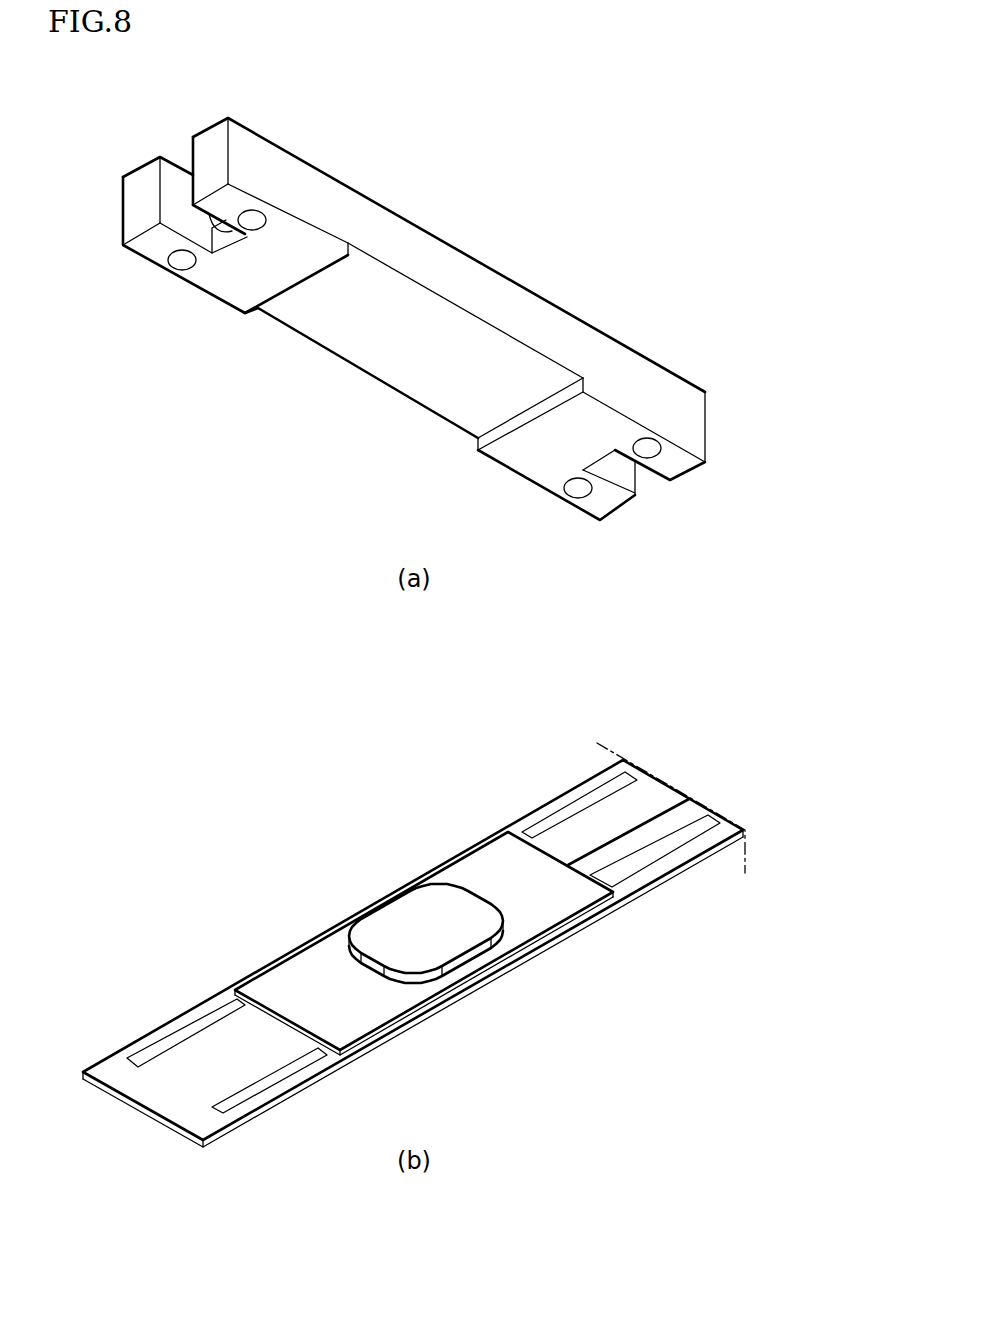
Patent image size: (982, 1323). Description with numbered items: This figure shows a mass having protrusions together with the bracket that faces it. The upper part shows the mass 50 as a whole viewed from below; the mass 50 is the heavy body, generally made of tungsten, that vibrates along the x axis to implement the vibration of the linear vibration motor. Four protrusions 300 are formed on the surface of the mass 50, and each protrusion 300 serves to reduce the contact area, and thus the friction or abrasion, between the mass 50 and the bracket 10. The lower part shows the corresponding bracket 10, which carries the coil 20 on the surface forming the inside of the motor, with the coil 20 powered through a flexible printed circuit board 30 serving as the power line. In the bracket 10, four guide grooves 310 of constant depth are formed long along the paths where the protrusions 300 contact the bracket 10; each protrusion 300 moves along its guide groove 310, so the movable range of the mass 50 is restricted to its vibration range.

The bracket 10 is at (357, 915).
The coil 20 is at (470, 965).
The flexible printed circuit board (FPCB) 30 is at (692, 807).
The guide groove 310 is at (265, 1080).
The protrusion 300 is at (252, 231).
The mass 50 is at (468, 250).